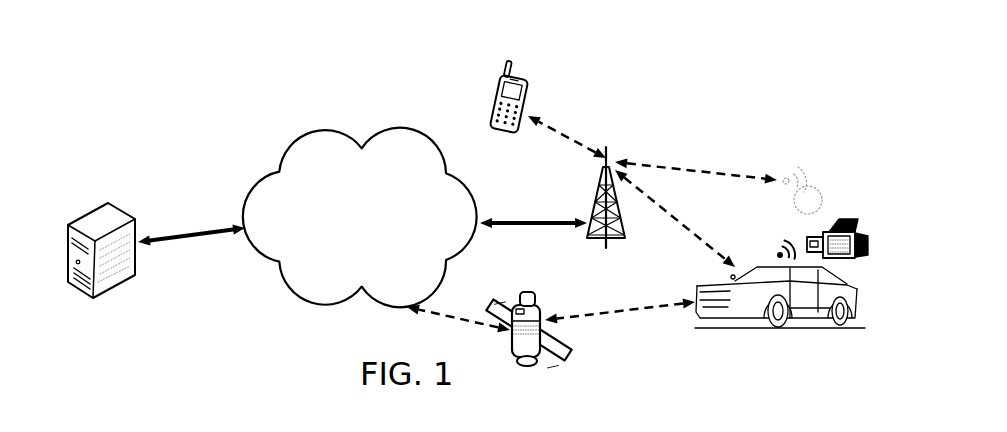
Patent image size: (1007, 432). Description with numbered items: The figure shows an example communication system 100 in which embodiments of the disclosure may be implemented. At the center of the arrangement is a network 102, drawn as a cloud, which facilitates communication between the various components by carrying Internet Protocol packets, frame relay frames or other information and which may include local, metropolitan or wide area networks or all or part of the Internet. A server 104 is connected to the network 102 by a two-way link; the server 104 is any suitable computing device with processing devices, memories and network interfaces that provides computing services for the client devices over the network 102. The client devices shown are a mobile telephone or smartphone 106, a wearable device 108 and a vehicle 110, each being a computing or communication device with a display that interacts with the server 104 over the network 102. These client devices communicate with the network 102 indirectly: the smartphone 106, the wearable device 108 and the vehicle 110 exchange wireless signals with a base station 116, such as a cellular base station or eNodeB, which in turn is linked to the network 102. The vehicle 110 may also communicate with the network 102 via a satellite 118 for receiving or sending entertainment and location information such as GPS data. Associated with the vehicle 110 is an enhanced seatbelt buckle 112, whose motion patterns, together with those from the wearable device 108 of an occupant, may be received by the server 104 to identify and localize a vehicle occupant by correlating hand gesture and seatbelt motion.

The communication system 100 is at (164, 54).
The network 102 is at (287, 135).
The server 104 is at (82, 218).
The mobile telephone 106 is at (523, 78).
The wearable device 108 is at (815, 182).
The vehicle 110 is at (843, 320).
The enhanced seatbelt buckle 112 is at (862, 230).
The base station 116 is at (627, 230).
The satellite 118 is at (550, 307).